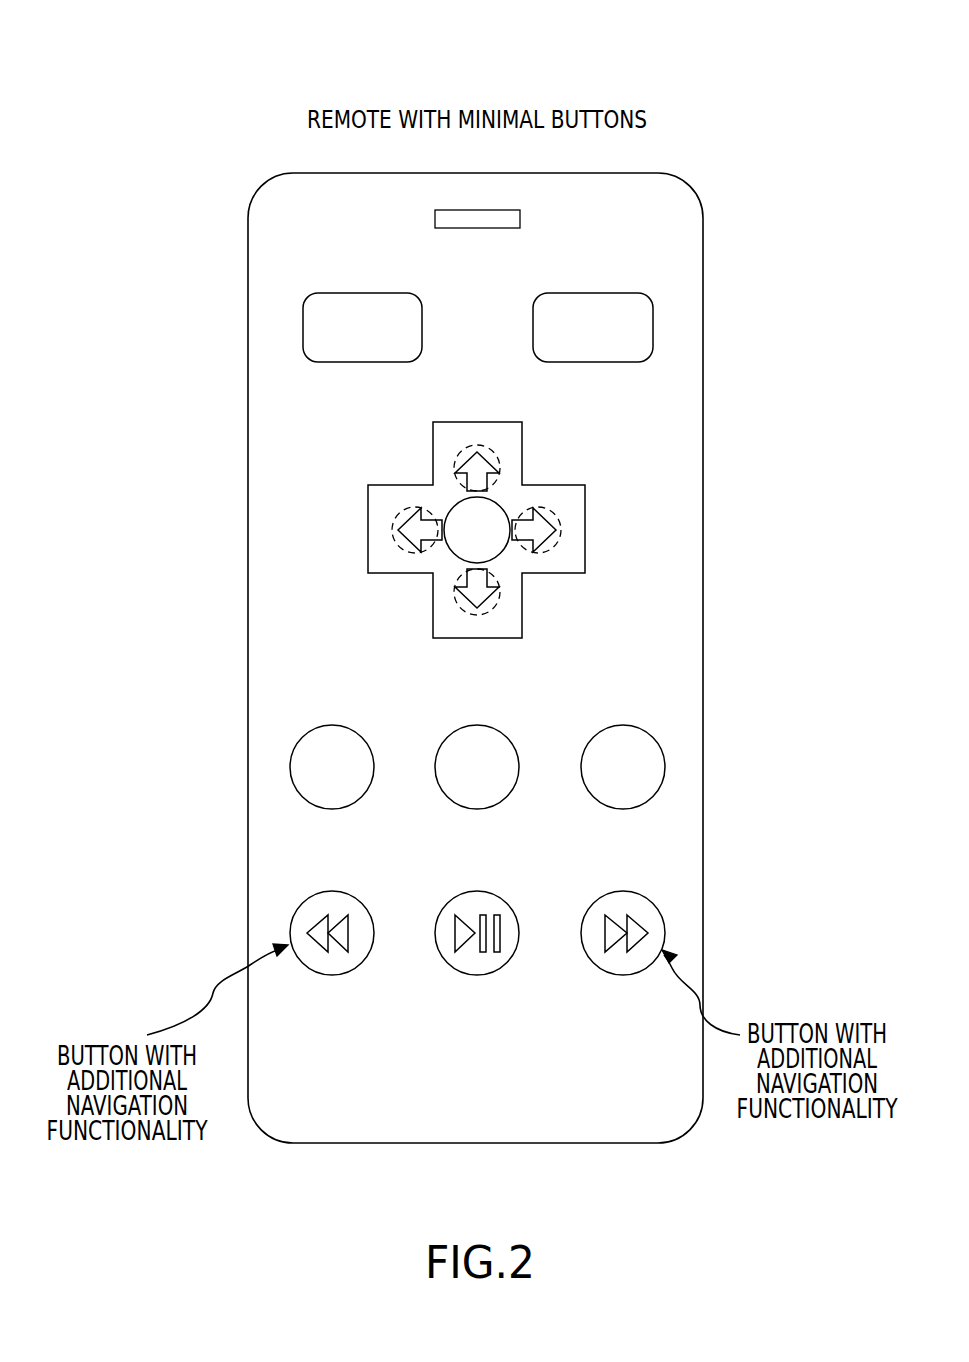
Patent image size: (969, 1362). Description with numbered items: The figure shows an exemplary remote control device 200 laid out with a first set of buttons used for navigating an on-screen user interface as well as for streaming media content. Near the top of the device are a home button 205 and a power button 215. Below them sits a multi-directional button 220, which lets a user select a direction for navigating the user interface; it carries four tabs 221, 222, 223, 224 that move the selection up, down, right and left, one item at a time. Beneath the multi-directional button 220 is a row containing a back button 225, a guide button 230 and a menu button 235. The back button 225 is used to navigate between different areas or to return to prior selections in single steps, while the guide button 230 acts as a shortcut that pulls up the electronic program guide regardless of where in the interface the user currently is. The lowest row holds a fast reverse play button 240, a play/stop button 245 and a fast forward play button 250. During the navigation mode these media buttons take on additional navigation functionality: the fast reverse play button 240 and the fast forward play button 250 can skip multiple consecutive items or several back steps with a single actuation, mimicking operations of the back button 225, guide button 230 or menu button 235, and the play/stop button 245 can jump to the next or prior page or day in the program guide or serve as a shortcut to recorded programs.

The remote control device 200 is at (738, 77).
The home button 205 is at (422, 317).
The power button 215 is at (617, 293).
The multi-directional button 220 is at (522, 450).
The tab 221 is at (478, 447).
The tab 222 is at (403, 500).
The tab 223 is at (560, 520).
The tab 224 is at (496, 600).
The back button 225 is at (355, 729).
The guide button 230 is at (500, 729).
The menu button 235 is at (632, 725).
The fast reverse play button 240 is at (352, 893).
The play/stop button 245 is at (500, 893).
The fast forward play button 250 is at (633, 893).